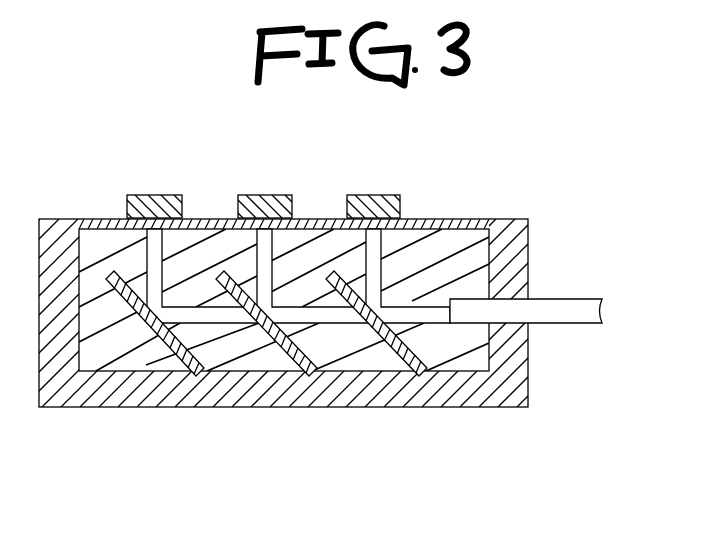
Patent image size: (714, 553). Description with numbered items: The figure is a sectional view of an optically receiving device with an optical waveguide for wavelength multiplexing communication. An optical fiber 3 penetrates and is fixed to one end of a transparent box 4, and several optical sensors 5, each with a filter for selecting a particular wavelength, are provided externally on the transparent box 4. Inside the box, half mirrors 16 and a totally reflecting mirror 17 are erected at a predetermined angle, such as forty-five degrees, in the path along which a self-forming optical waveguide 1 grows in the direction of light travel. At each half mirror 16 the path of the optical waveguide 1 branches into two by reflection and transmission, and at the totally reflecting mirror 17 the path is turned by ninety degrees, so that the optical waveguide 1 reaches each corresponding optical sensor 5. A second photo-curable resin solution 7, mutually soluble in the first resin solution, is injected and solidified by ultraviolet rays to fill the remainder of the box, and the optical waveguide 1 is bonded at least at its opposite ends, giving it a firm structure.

The optical waveguide 1 is at (308, 226).
The optical fiber 3 is at (533, 248).
The transparent box 4 is at (352, 358).
The optical sensor 5 is at (142, 195).
The second photo-curable resin solution 7 is at (284, 362).
The half mirror 16 is at (320, 390).
The totally reflecting mirror 17 is at (152, 387).